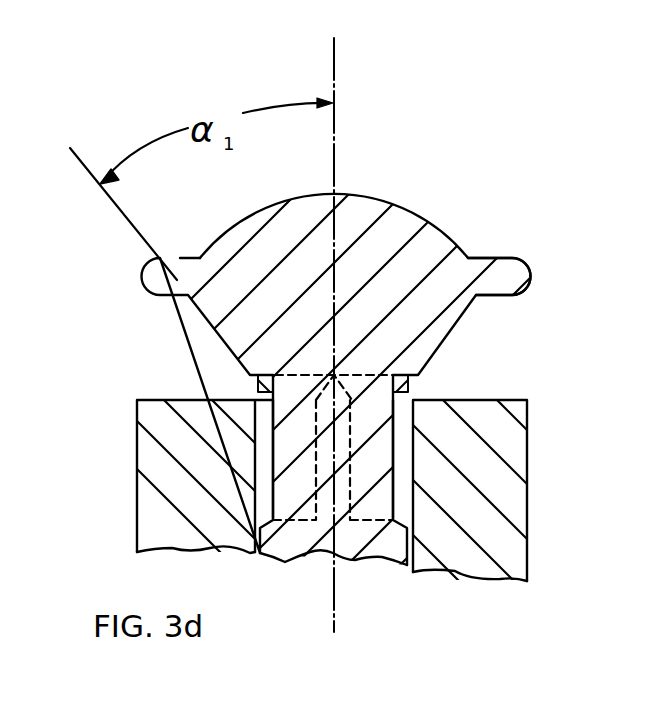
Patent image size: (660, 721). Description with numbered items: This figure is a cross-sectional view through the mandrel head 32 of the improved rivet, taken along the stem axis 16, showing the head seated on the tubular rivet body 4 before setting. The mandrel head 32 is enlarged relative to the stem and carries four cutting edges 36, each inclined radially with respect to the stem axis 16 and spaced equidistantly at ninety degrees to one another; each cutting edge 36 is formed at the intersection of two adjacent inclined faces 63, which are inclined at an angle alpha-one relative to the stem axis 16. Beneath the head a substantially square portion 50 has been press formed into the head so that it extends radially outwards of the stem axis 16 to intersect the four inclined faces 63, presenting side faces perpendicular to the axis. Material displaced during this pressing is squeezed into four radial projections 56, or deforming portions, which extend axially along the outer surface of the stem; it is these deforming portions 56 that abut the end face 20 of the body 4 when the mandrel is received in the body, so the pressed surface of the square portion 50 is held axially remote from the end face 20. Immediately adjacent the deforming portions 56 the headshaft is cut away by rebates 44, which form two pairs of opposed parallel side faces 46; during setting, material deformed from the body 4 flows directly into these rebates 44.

The stem axis 16 is at (334, 56).
The mandrel head 32 is at (400, 200).
The inclined faces 63 is at (468, 306).
The substantially rectangular portion 50 is at (248, 383).
The radial projections 56 is at (425, 391).
The end face 20 is at (153, 400).
The cylindrical body 4 is at (510, 547).
The rebates 44 is at (270, 470).
The opposed parallel side faces 46 is at (395, 446).
The cutting edges 36 is at (12, 15).